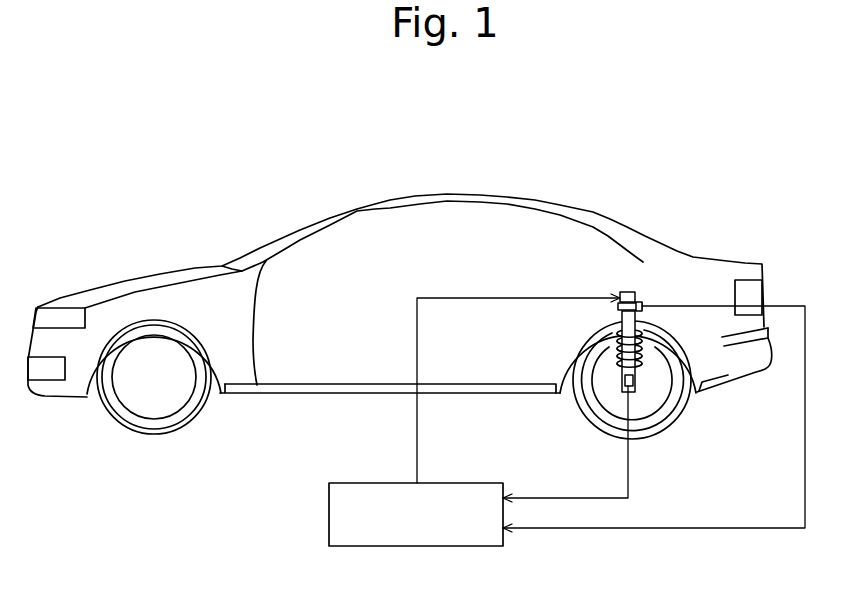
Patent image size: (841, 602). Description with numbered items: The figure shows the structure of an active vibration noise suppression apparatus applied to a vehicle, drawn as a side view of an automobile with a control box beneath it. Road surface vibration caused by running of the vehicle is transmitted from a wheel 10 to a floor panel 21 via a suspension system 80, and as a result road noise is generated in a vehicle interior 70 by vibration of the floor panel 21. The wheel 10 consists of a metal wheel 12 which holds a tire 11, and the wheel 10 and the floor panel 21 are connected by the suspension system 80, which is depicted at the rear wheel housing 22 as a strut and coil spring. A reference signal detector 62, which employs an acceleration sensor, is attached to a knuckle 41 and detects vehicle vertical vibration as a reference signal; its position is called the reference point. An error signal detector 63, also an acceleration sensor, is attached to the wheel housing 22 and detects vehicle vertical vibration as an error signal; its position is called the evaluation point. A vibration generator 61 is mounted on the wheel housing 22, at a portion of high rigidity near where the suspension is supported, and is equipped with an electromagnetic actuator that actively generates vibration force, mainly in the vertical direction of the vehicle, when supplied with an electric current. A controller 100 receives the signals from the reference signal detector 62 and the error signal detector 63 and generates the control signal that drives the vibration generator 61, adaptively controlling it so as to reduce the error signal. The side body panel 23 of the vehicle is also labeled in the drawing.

The wheel 10 is at (665, 404).
The tire 11 is at (671, 405).
The metal wheel 12 is at (673, 388).
The floor panel 21 is at (340, 390).
The wheel housing 22 is at (677, 316).
The door 23 is at (298, 362).
The knuckle 41 is at (616, 383).
The vibration generator 61 is at (634, 292).
The reference signal detector 62 is at (634, 386).
The error signal detector 63 is at (645, 303).
The vehicle interior 70 is at (401, 305).
The suspension system 80 is at (607, 396).
The controller 100 is at (457, 483).